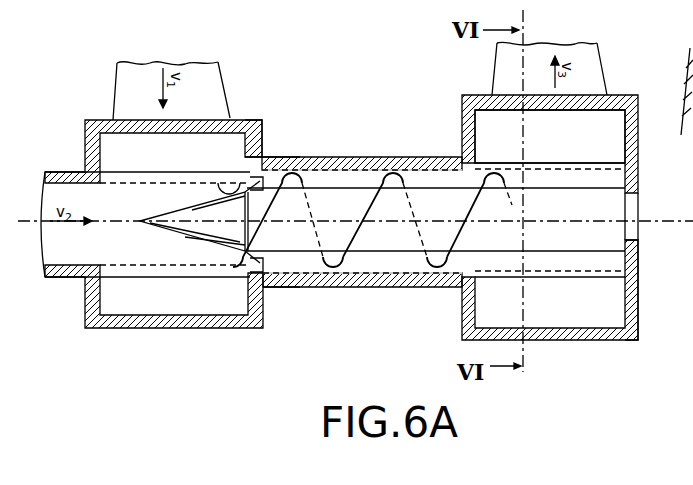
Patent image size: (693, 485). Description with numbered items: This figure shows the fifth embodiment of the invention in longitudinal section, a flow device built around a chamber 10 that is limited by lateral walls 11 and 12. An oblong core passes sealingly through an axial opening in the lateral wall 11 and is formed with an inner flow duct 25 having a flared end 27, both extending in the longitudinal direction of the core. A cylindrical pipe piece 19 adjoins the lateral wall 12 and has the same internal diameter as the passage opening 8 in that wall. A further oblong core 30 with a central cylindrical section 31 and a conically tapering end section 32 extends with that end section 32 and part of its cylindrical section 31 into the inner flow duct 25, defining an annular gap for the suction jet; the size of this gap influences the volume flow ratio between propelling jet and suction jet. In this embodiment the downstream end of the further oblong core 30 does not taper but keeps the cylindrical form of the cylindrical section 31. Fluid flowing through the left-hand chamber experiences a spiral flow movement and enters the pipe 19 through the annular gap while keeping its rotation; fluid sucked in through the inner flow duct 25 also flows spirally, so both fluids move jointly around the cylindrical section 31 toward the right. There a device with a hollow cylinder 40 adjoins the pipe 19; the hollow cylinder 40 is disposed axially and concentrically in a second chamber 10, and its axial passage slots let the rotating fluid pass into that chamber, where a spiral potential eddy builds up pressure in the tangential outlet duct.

The passage opening 8 is at (278, 158).
The chamber 10 is at (221, 151).
The lateral wall 11 is at (465, 121).
The lateral wall 12 is at (263, 131).
The cylindrical pipe piece 19 is at (357, 280).
The inner flow duct 25 is at (104, 250).
The flared end 27 is at (214, 176).
The further oblong core 30 is at (352, 165).
The cylindrical section 31 is at (298, 243).
The end section 32 is at (178, 231).
The hollow cylinder 40 is at (488, 162).